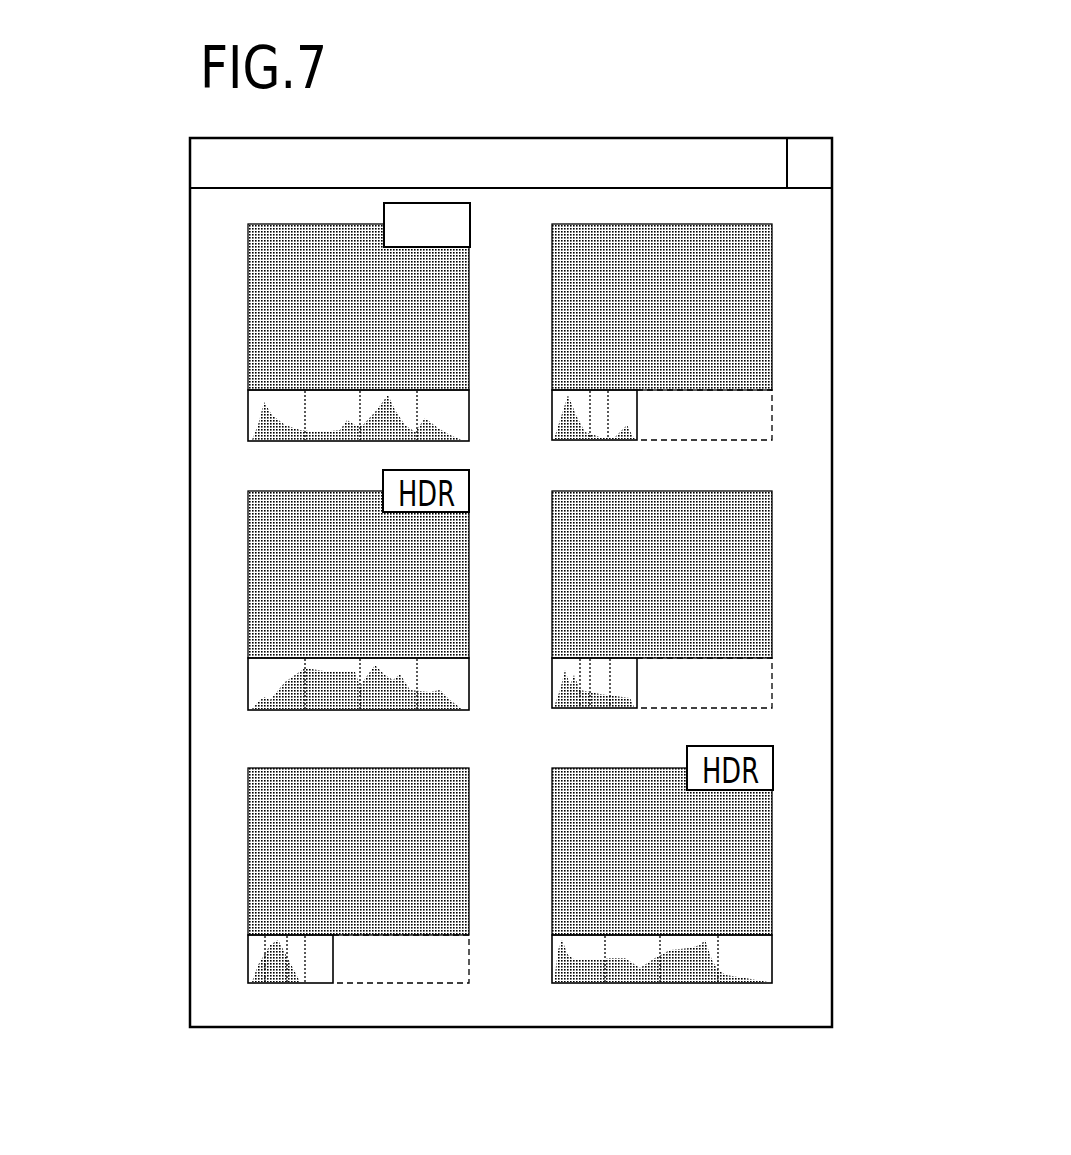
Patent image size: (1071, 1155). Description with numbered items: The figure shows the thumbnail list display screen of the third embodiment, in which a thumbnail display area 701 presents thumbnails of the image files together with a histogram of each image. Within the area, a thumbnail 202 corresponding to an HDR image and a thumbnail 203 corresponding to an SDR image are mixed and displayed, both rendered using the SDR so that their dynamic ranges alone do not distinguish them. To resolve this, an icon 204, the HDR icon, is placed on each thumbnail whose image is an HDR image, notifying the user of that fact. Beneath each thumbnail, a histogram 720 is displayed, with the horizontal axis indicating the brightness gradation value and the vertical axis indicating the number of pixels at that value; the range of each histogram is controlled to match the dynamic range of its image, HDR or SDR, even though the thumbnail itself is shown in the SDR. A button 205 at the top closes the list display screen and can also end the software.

The thumbnail 202 is at (247, 310).
The thumbnail 203 is at (247, 857).
The icon 204 is at (470, 228).
The button 205 is at (822, 162).
The thumbnail display area 701 is at (817, 441).
The histogram 720 is at (273, 427).